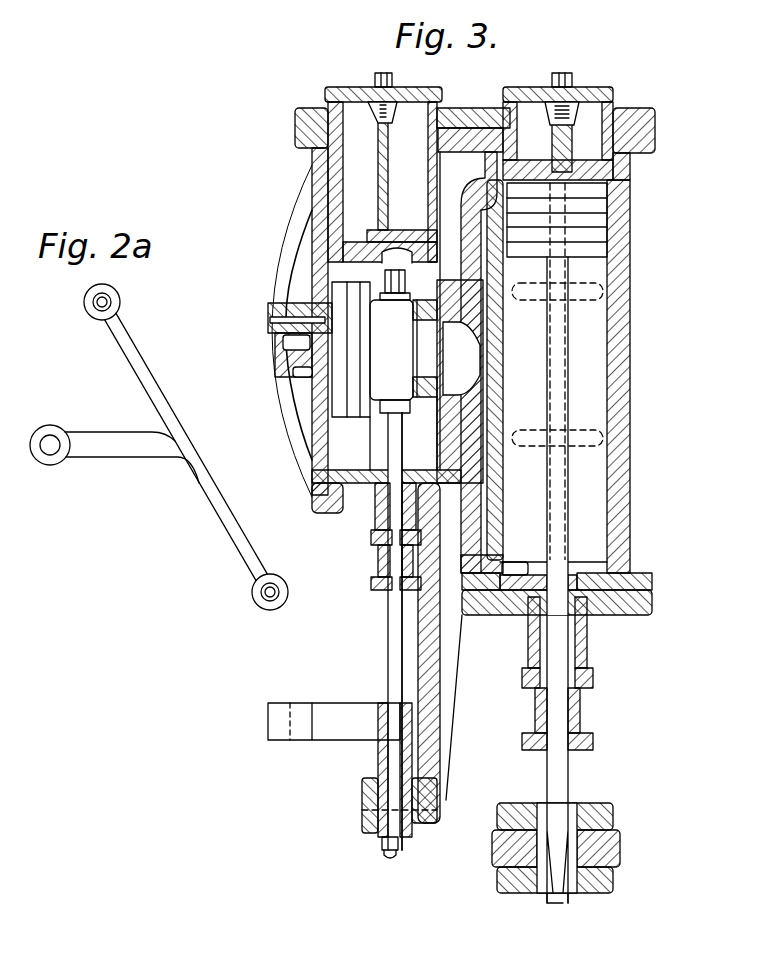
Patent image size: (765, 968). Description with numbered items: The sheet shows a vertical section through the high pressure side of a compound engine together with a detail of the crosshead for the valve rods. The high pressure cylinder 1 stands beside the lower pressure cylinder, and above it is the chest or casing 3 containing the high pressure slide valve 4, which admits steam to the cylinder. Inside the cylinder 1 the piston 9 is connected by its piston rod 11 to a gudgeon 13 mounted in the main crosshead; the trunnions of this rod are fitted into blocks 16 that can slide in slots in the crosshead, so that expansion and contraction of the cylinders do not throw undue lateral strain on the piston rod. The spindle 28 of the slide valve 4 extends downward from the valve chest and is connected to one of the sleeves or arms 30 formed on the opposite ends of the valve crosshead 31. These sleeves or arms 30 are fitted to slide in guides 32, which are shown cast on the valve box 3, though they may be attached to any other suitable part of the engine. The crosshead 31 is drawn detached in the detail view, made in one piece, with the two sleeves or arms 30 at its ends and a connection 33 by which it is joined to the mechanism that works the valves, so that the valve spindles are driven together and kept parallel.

In FIG. 3, the high pressure cylinder 1 is at (595, 368).
In FIG. 3, the chest or casing 3 is at (340, 270).
In FIG. 3, the high pressure slide valve 4 is at (391, 341).
In FIG. 3, the piston 9 is at (598, 203).
In FIG. 3, the piston rod 11 is at (553, 777).
In FIG. 3, the gudgeon 13 is at (622, 843).
In FIG. 3, the blocks 16 is at (498, 870).
In FIG. 3, the spindle 28 is at (393, 615).
In FIG. 3, the sleeves or arms 30 is at (378, 768).
In FIG. 2A, the sleeves or arms 30 is at (85, 300).
In FIG. 3, the crosshead 31 is at (340, 713).
In FIG. 2A, the crosshead 31 is at (208, 483).
In FIG. 3, the guides 32 is at (363, 818).
In FIG. 3, the connection 33 is at (280, 707).
In FIG. 2A, the connection 33 is at (53, 437).